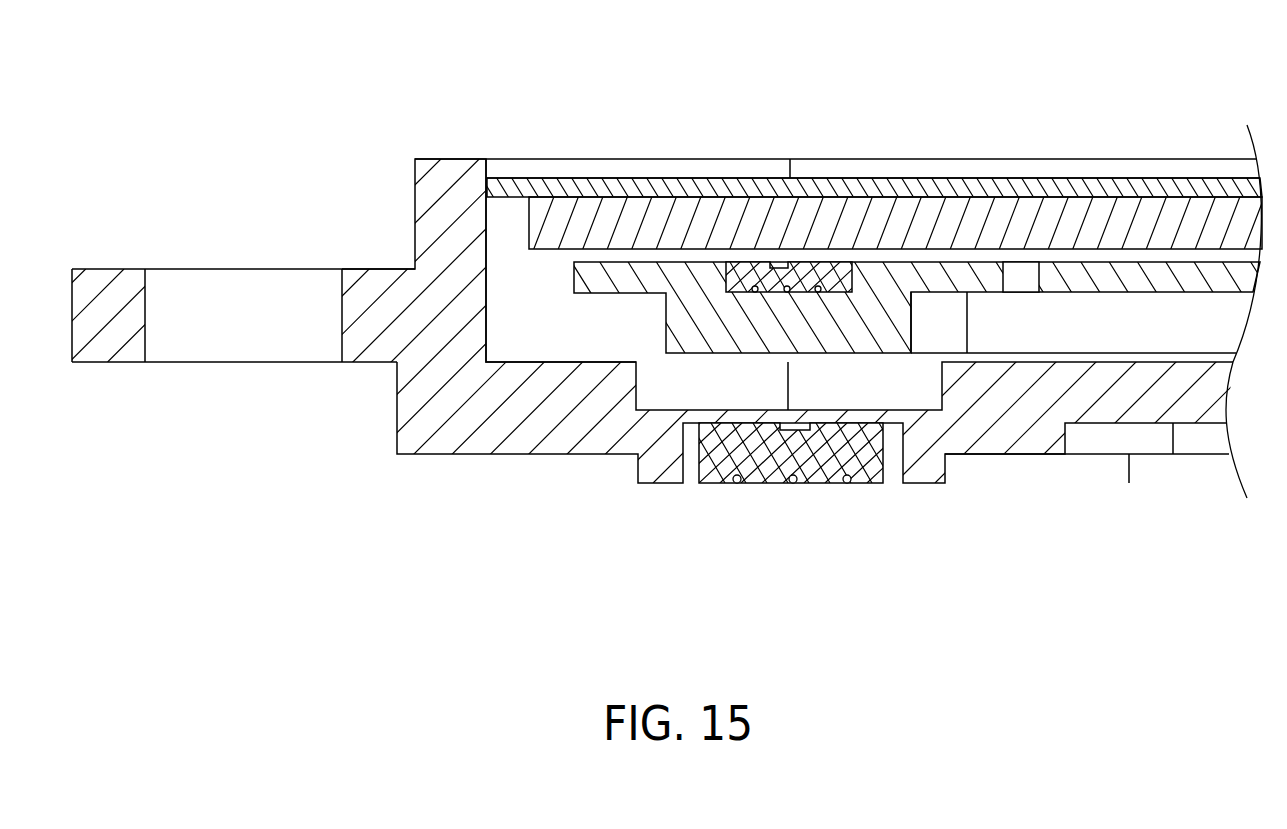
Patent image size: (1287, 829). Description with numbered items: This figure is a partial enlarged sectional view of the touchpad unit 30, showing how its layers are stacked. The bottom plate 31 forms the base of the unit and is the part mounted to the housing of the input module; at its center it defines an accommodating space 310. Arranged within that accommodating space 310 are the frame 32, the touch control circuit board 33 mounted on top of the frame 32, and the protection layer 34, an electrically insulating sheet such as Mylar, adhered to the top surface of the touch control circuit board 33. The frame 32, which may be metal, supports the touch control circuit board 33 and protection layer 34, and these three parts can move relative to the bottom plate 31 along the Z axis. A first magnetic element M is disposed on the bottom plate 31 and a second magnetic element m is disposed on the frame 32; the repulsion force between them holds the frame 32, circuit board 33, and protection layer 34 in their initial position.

The touchpad unit 30 is at (368, 110).
The bottom plate 31 is at (503, 427).
The accommodating space 310 is at (560, 352).
The frame 32 is at (693, 288).
The touch control circuit board 33 is at (1128, 223).
The protection layer 34 is at (1022, 190).
The second magnetic element m is at (818, 275).
The first magnetic element M is at (822, 487).